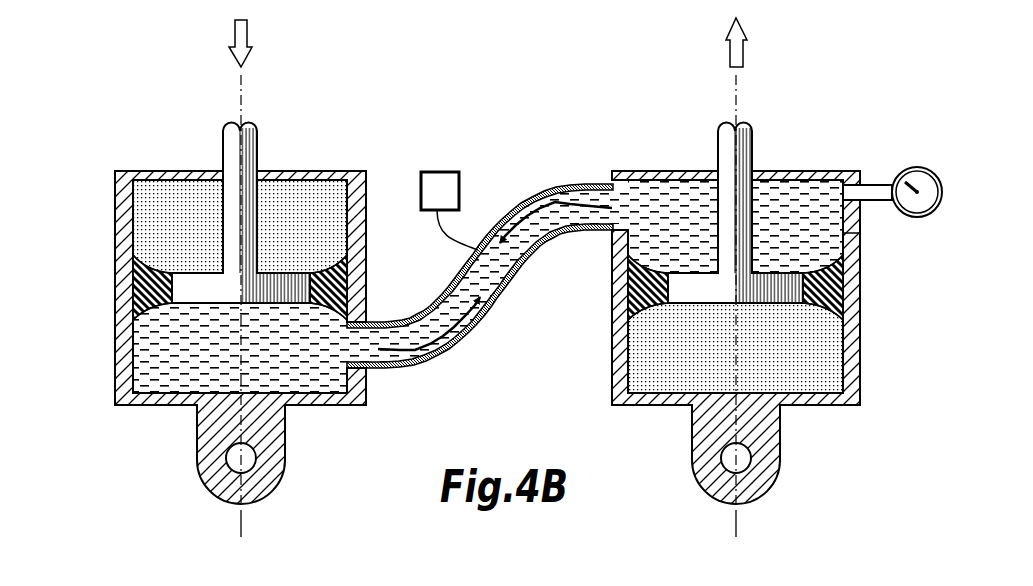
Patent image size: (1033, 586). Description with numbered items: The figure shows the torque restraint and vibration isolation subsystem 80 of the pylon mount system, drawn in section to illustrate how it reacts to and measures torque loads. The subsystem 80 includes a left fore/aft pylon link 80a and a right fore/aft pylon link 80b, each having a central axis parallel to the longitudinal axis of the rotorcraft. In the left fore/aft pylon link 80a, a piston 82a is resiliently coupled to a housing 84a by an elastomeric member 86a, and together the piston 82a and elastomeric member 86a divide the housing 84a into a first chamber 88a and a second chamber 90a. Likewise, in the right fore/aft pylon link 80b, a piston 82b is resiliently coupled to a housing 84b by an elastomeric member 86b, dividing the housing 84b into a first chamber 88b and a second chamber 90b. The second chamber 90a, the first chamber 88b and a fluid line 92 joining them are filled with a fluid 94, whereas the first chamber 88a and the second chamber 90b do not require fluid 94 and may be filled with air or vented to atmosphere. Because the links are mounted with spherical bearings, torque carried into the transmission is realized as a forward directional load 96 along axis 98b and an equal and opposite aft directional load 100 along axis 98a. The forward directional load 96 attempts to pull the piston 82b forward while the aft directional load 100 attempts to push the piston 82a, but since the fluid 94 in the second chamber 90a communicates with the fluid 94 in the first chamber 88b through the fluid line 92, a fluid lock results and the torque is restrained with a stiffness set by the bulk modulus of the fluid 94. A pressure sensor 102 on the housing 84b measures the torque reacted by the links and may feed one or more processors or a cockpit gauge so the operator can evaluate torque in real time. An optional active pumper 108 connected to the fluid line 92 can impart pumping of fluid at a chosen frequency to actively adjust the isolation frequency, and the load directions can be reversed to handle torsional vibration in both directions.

The torque restraint and vibration isolation subsystem 80 is at (178, 88).
The left fore/aft pylon link 80a is at (131, 171).
The right fore/aft pylon link 80b is at (846, 171).
The piston 82a is at (188, 305).
The piston 82b is at (787, 305).
The housing 84a is at (116, 193).
The housing 84b is at (861, 245).
The elastomeric member 86a is at (134, 292).
The elastomeric member 86b is at (846, 293).
The first chamber 88a is at (312, 196).
The first chamber 88b is at (665, 197).
The second chamber 90a is at (313, 384).
The second chamber 90b is at (665, 384).
The fluid line 92 is at (549, 188).
The fluid 94 is at (490, 276).
The forward directional load 96 is at (727, 35).
The axis 98a is at (240, 525).
The axis 98b is at (737, 525).
The aft directional load 100 is at (247, 33).
The pressure sensor 102 is at (918, 167).
The active pumper 108 is at (437, 172).